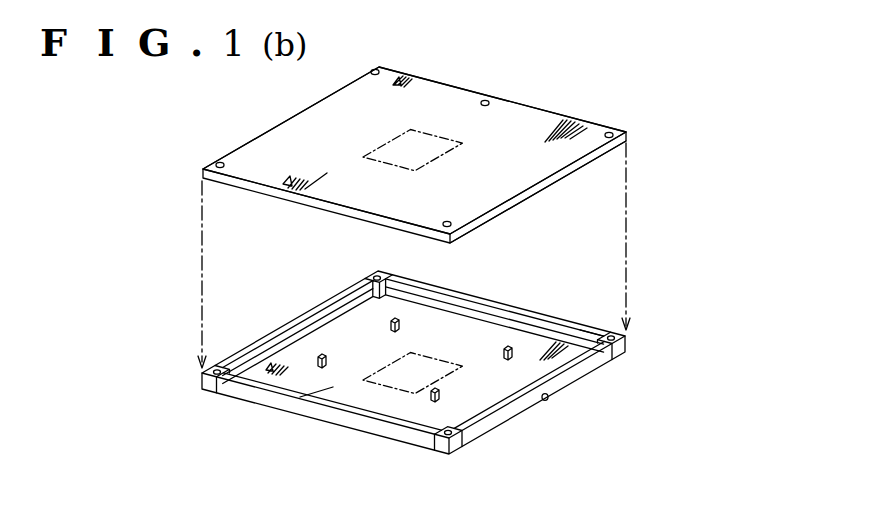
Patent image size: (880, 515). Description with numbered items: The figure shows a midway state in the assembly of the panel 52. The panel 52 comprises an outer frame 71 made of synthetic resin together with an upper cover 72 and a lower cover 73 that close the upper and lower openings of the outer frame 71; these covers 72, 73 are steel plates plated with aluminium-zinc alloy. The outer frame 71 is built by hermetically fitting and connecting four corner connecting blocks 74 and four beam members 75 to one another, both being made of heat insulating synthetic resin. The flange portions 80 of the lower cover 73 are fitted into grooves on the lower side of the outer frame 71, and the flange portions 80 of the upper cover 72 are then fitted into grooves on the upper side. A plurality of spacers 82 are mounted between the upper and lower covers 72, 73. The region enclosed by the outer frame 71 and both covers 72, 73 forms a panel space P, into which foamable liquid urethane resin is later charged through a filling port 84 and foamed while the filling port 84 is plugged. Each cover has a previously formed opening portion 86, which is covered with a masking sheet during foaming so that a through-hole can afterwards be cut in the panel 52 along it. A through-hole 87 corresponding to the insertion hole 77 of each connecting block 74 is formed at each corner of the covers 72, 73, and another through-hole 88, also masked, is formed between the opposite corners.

The panel 52 is at (673, 219).
The outer frame 71 is at (600, 386).
The upper cover 72 is at (534, 102).
The lower cover 73 is at (483, 397).
The connecting block 74 is at (368, 277).
The beam member 75 is at (490, 302).
The insertion hole 77 is at (610, 322).
The flange portion 80 is at (540, 188).
The spacer 82 is at (330, 358).
The filling port 84 is at (548, 400).
The opening portion 86 is at (397, 137).
The through-hole 87 is at (379, 68).
The through-hole 88 is at (486, 100).
The panel space P is at (333, 387).